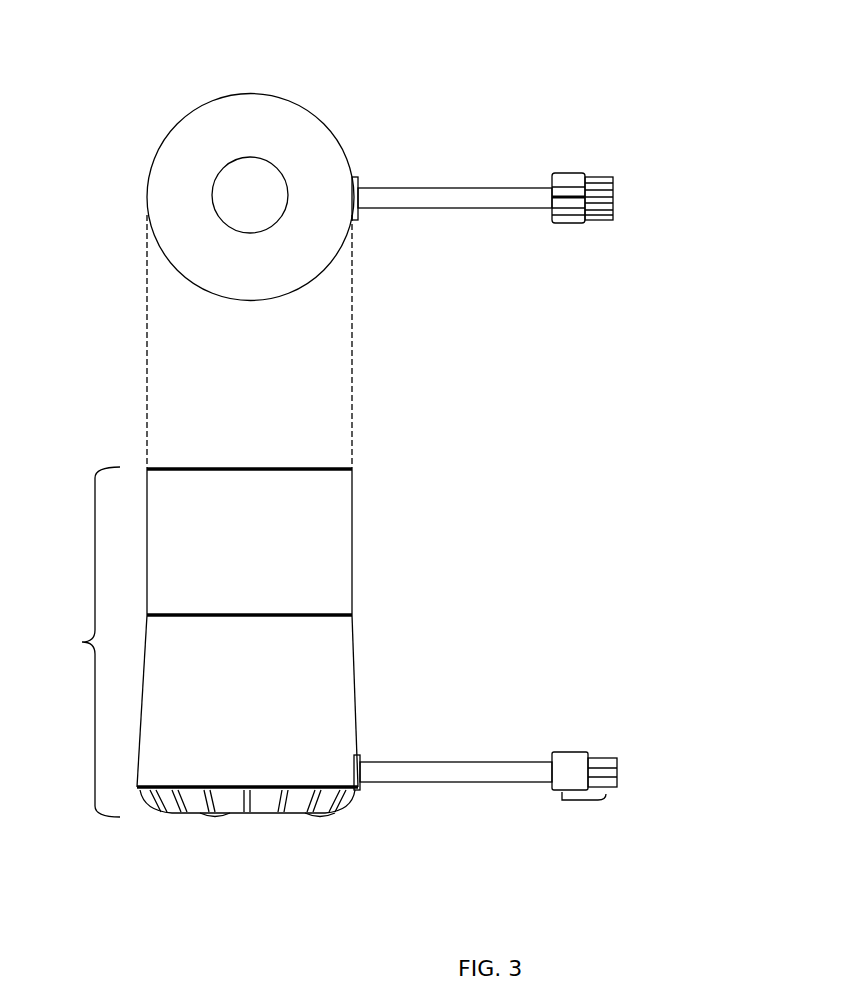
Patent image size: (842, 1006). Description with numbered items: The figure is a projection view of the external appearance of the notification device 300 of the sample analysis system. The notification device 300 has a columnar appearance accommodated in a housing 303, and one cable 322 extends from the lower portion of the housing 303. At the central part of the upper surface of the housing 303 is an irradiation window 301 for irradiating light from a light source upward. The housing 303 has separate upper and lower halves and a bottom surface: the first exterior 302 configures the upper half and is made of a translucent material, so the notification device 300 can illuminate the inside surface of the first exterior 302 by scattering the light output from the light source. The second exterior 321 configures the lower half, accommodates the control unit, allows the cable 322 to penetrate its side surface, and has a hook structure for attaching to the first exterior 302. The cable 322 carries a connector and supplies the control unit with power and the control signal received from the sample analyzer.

The notification device 300 is at (600, 57).
The irradiation window 301 is at (248, 157).
The first exterior 302 is at (353, 470).
The housing 303 is at (80, 642).
The second exterior 321 is at (353, 624).
The cable 322 is at (570, 172).